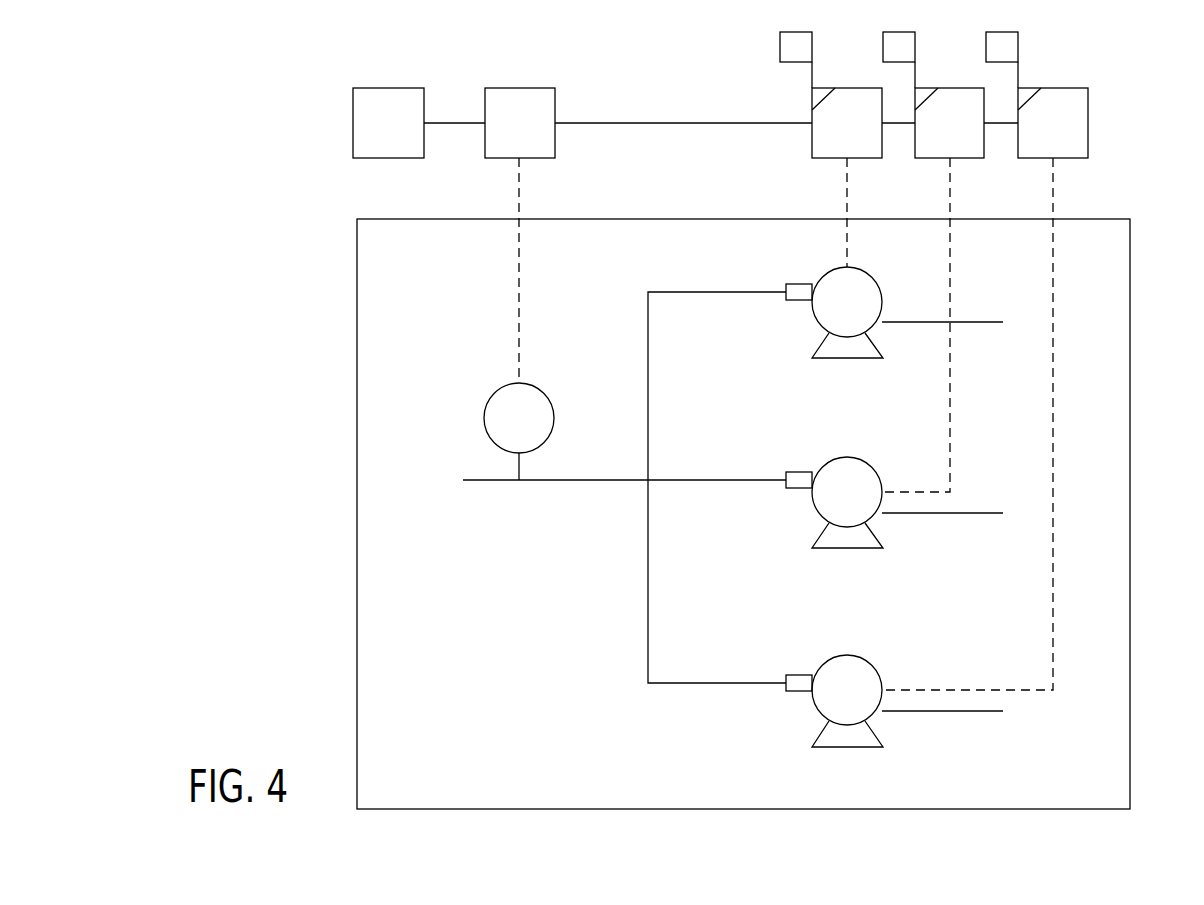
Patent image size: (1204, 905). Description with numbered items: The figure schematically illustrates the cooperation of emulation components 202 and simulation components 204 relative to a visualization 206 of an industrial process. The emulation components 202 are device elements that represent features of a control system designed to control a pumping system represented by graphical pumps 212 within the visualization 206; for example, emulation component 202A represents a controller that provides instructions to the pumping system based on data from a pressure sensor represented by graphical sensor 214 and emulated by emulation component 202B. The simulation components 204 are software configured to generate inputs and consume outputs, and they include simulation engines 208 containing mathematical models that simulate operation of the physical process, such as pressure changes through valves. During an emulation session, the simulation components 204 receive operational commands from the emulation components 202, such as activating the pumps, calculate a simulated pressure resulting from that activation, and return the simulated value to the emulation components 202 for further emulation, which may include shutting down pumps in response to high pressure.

The emulation components 202 is at (472, 116).
The emulation component 202A is at (405, 158).
The emulation component 202B is at (530, 158).
The simulation components 204 is at (830, 158).
The visualization 206 is at (357, 513).
The simulation engines 208 is at (780, 48).
The graphical pumps 212 is at (814, 316).
The graphical sensor 214 is at (555, 418).